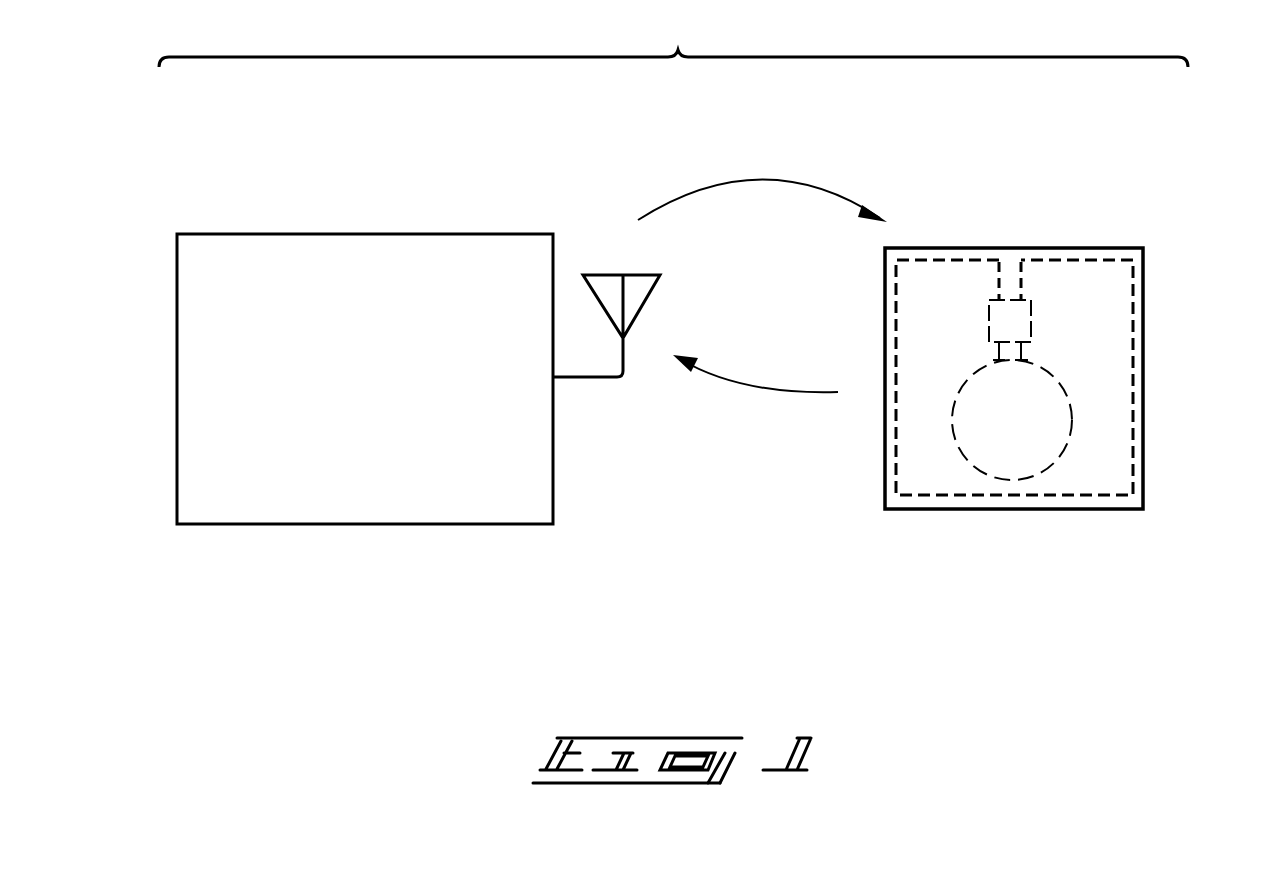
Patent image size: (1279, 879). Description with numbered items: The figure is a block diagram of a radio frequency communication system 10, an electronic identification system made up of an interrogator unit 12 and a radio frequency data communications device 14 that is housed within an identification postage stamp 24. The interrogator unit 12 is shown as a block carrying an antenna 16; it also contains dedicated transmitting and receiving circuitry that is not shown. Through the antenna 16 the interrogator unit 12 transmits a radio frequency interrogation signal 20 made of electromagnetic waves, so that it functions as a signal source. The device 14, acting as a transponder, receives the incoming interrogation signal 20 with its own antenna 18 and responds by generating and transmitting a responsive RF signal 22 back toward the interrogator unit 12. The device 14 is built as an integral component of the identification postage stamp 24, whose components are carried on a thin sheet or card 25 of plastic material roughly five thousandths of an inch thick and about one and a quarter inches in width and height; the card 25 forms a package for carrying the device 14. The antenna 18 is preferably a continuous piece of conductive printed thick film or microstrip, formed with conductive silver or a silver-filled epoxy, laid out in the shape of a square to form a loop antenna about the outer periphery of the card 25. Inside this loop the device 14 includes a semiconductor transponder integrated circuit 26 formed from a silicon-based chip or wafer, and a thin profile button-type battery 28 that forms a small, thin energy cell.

The radio frequency communication system 10 is at (673, 33).
The interrogator unit 12 is at (432, 566).
The radio frequency data communications device 14 is at (1095, 341).
The antenna 16 is at (647, 300).
The antenna 18 is at (1132, 463).
The interrogation signal 20 is at (775, 180).
The responsive RF signal 22 is at (752, 390).
The identification postage stamp 24 is at (1056, 553).
The card 25 is at (930, 462).
The integrated circuit 26 is at (1031, 313).
The battery 28 is at (1070, 410).